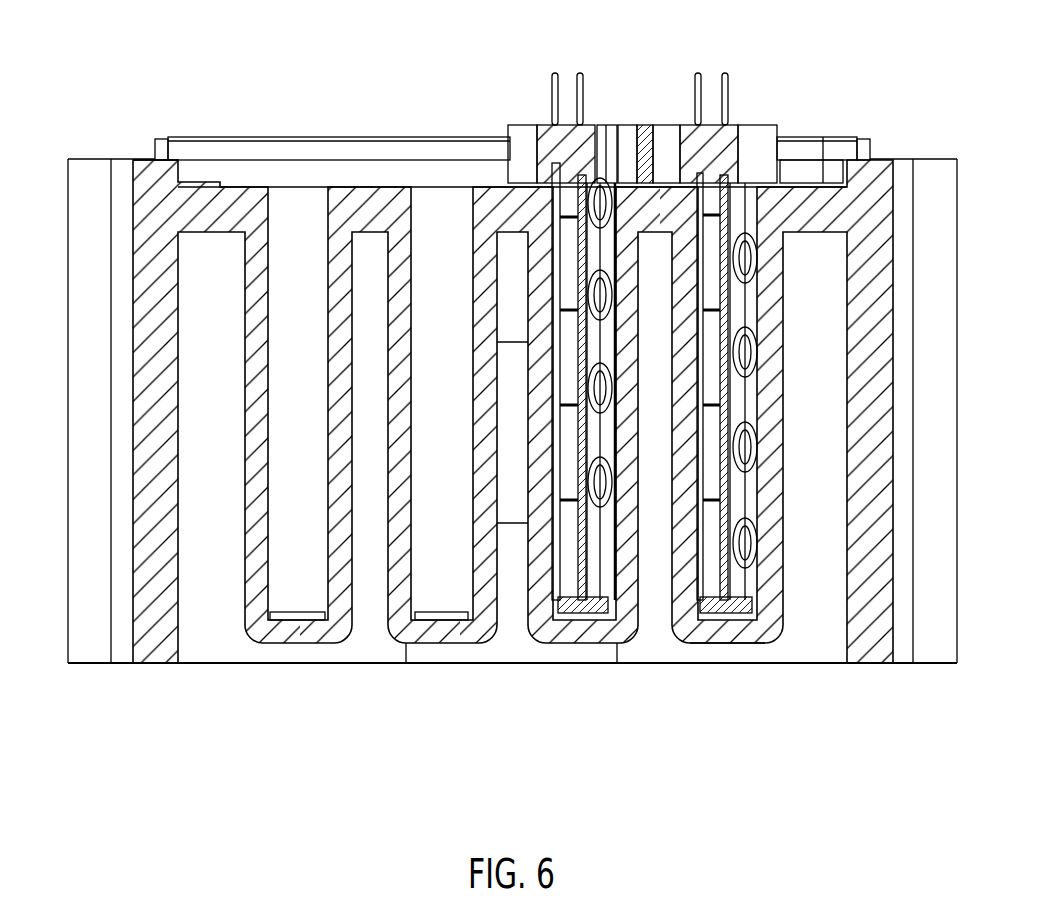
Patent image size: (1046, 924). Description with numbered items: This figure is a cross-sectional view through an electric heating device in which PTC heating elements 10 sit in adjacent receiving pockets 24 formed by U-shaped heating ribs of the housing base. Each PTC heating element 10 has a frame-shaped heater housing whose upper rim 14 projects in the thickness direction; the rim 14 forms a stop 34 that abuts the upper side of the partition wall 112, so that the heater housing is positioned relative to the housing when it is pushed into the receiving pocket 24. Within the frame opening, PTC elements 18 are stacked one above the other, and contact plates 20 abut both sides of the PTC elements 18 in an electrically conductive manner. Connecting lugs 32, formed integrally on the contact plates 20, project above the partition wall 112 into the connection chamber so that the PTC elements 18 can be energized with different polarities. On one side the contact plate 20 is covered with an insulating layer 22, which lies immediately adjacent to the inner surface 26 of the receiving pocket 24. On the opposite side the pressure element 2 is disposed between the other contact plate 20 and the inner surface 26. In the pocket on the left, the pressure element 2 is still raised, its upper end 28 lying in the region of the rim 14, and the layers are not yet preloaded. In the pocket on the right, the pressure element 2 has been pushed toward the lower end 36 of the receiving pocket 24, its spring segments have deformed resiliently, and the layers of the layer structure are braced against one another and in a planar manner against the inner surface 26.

The PTC heating element 10 is at (763, 110).
The pressure element 2 is at (770, 183).
The upper rim 14 is at (529, 125).
The partition wall 112 is at (368, 207).
The receiving pocket 24 is at (435, 213).
The inner surface 26 is at (268, 256).
The upper end of the pressure element 28 is at (750, 284).
The contact plate 20 is at (752, 321).
The PTC element 18 is at (713, 327).
The insulating layer 22 is at (702, 551).
The connecting lug 32 is at (697, 66).
The stop 34 is at (637, 176).
The lower end of the receiving pocket 36 is at (752, 643).